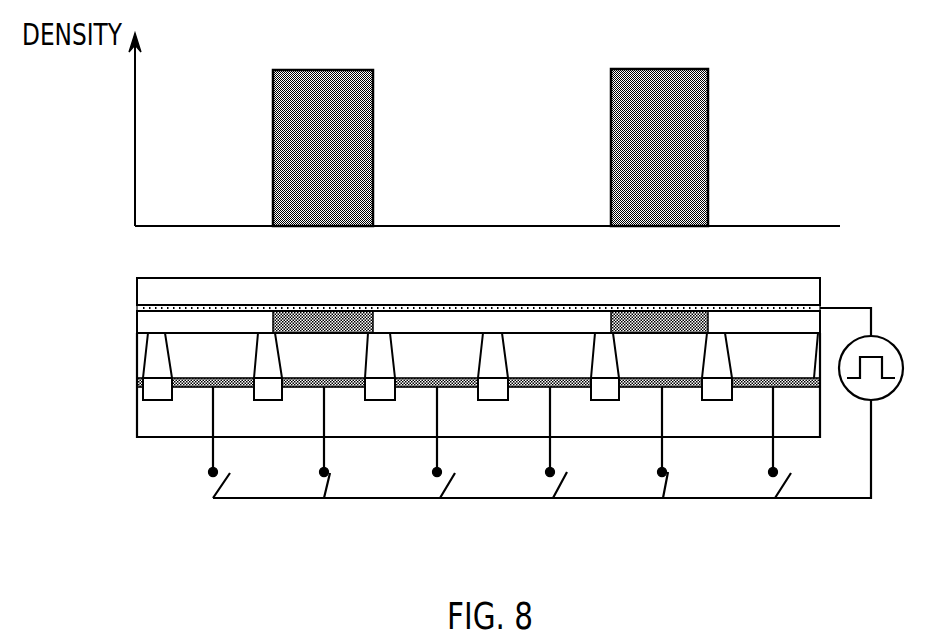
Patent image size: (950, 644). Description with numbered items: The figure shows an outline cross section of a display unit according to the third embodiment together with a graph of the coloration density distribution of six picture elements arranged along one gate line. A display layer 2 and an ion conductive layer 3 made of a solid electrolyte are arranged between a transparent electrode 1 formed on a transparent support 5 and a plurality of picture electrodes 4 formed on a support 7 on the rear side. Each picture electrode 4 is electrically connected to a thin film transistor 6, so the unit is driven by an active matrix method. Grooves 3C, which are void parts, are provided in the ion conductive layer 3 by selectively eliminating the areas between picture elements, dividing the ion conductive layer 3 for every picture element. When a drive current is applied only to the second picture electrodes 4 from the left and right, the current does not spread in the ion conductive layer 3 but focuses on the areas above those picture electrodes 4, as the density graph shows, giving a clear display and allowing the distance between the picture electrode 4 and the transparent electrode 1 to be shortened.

The transparent electrode 1 is at (148, 306).
The display layer 2 is at (145, 321).
The ion conductive layer 3 is at (454, 444).
The grooves 3C is at (380, 357).
The picture electrodes 4 is at (172, 380).
The transparent support 5 is at (148, 291).
The thin film transistor (TFT) 6 is at (212, 485).
The support 7 is at (148, 425).